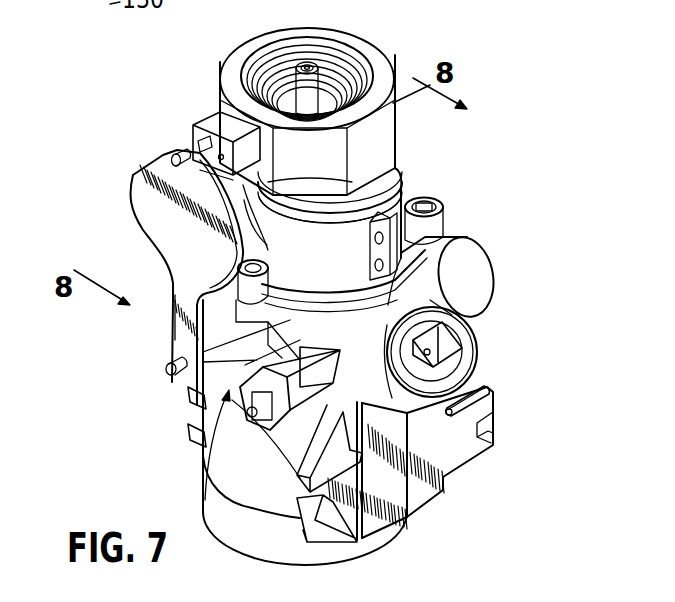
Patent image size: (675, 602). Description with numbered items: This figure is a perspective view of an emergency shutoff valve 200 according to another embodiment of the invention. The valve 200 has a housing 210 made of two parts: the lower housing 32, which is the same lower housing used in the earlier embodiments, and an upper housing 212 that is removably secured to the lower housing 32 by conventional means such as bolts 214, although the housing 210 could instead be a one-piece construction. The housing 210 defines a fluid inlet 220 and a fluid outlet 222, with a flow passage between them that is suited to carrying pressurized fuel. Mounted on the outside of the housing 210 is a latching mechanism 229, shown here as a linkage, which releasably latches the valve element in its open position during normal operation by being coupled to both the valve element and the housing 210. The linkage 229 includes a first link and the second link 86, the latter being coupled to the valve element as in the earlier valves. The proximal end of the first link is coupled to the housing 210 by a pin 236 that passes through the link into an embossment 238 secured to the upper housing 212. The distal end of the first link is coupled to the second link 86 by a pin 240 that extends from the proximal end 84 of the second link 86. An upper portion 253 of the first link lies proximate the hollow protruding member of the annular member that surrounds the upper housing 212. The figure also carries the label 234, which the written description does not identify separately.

The emergency shutoff valve 200 is at (477, 88).
The housing 210 is at (396, 74).
The upper housing 212 is at (376, 131).
The bolts 214 is at (440, 215).
The fluid inlet 220 is at (370, 547).
The fluid outlet 222 is at (335, 42).
The latching mechanism 229 is at (162, 337).
The bracket 234 is at (163, 238).
The pin 236 is at (170, 150).
The embossment 238 is at (200, 118).
The pin 240 is at (166, 373).
The upper portion of first link 253 is at (137, 197).
The lower housing 32 is at (492, 398).
The proximal end of second link 84 is at (205, 402).
The second link 86 is at (205, 440).